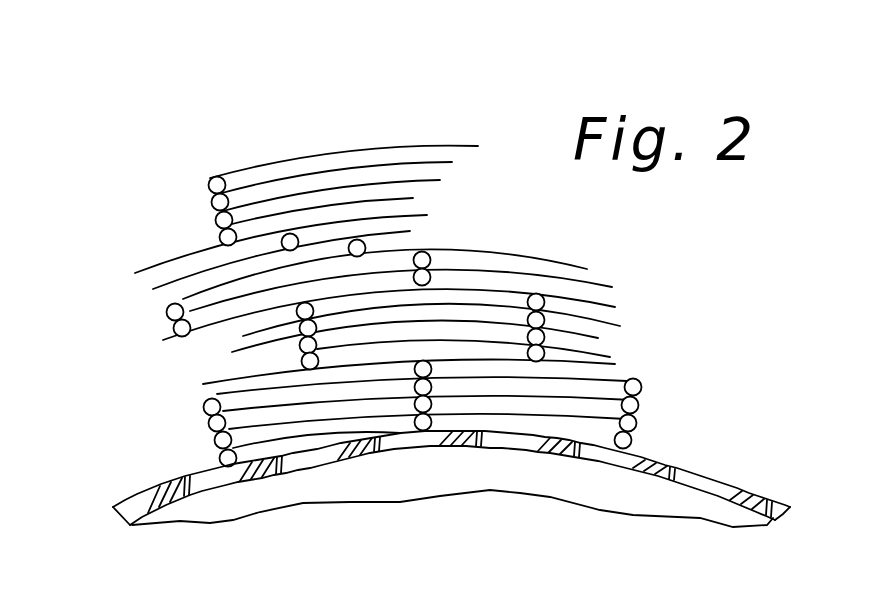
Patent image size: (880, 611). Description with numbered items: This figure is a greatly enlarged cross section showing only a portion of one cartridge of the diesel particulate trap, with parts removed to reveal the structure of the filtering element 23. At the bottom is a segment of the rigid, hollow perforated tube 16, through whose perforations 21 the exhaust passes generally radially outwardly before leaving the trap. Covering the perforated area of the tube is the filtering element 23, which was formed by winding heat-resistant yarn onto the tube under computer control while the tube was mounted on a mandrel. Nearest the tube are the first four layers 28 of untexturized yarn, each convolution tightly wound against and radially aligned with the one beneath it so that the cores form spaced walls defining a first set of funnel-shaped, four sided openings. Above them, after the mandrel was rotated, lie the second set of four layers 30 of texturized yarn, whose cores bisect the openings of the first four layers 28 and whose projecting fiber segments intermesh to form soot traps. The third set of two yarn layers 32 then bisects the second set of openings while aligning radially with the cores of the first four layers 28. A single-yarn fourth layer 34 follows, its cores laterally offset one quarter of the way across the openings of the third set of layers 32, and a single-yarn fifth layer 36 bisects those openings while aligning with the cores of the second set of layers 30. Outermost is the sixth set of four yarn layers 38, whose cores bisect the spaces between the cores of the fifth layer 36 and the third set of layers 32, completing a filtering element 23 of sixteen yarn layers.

The perforated tube 16 is at (172, 500).
The perforations 21 is at (440, 433).
The filtering element 23 is at (462, 138).
The first four layers 28 is at (210, 425).
The second set of four layers 30 is at (546, 318).
The third set of two yarn layers 32 is at (440, 258).
The fourth layer 34 is at (364, 246).
The fifth layer 36 is at (298, 236).
The sixth set of four yarn layers 38 is at (216, 215).